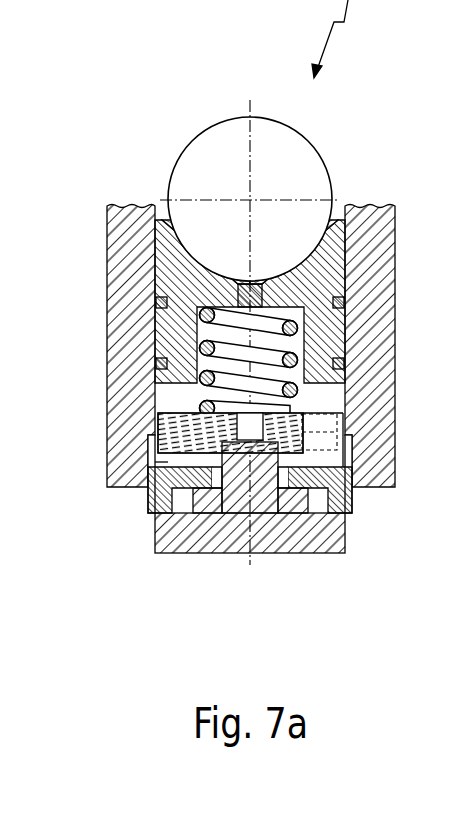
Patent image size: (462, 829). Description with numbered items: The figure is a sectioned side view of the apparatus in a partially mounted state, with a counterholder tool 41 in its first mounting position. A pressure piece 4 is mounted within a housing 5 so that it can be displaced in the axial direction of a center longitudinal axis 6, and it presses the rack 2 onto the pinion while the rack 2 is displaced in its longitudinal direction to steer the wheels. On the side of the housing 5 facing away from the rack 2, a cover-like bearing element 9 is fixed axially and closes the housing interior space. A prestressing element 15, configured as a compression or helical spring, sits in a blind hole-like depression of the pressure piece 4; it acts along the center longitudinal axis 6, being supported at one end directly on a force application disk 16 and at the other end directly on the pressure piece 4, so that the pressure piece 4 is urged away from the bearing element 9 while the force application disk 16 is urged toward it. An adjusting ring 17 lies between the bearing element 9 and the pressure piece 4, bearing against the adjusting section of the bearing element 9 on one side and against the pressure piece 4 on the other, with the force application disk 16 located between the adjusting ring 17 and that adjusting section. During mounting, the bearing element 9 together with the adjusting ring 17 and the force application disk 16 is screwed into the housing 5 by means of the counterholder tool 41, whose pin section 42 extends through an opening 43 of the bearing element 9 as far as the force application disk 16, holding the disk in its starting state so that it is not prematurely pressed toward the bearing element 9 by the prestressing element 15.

The rack 2 is at (222, 150).
The pressure piece 4 is at (156, 320).
The housing 5 is at (132, 220).
The center longitudinal axis 6 is at (250, 100).
The bearing element 9 is at (148, 500).
The prestressing element 15 is at (158, 378).
The force application disk 16 is at (158, 428).
The adjusting ring 17 is at (150, 468).
The counterholder tool 41 is at (330, 527).
The pin section 42 is at (257, 490).
The opening 43 is at (200, 505).